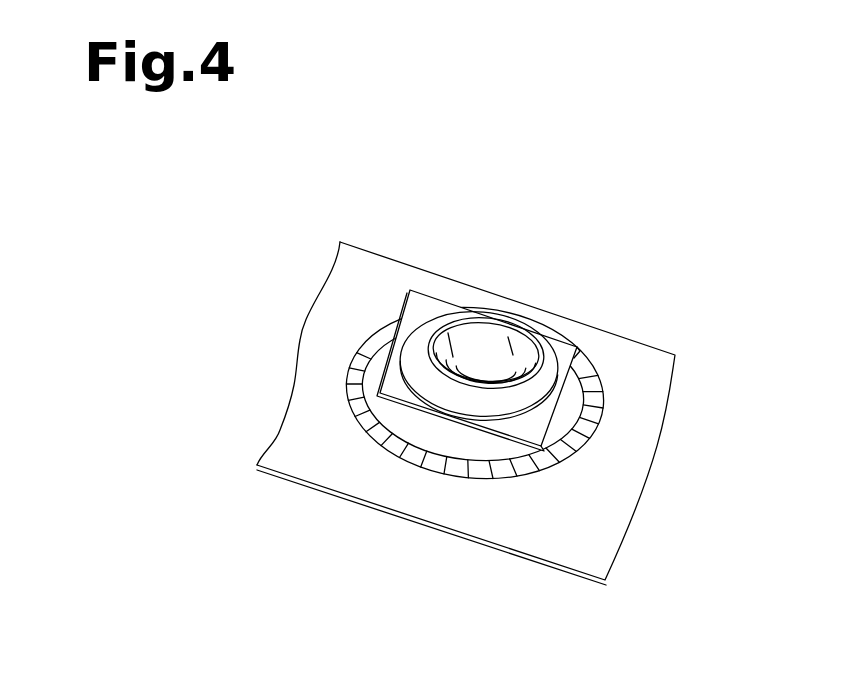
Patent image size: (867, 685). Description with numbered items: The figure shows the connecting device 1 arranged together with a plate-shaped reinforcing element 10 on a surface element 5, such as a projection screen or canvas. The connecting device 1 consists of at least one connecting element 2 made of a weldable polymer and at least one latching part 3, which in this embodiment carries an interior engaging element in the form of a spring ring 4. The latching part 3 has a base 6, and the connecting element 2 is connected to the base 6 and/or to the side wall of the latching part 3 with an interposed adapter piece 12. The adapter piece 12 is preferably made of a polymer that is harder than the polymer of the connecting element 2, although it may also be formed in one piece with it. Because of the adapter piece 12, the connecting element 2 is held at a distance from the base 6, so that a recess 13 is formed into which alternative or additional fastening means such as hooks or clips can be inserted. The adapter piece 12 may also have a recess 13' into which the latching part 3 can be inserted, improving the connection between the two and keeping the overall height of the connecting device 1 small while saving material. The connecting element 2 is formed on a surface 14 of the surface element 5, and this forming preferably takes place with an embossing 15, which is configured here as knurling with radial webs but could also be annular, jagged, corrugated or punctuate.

The connecting device 1 is at (207, 488).
The connecting element 2 is at (605, 468).
The latching part 3 is at (543, 387).
The spring ring 4 is at (497, 347).
The surface element 5 is at (627, 372).
The base 6 is at (518, 343).
The plate-shaped reinforcing element 10 is at (406, 286).
The adapter piece 12 is at (563, 352).
The recess 13 is at (536, 535).
The recess 13' is at (276, 382).
The surface 14 is at (375, 372).
The embossing 15 is at (395, 446).